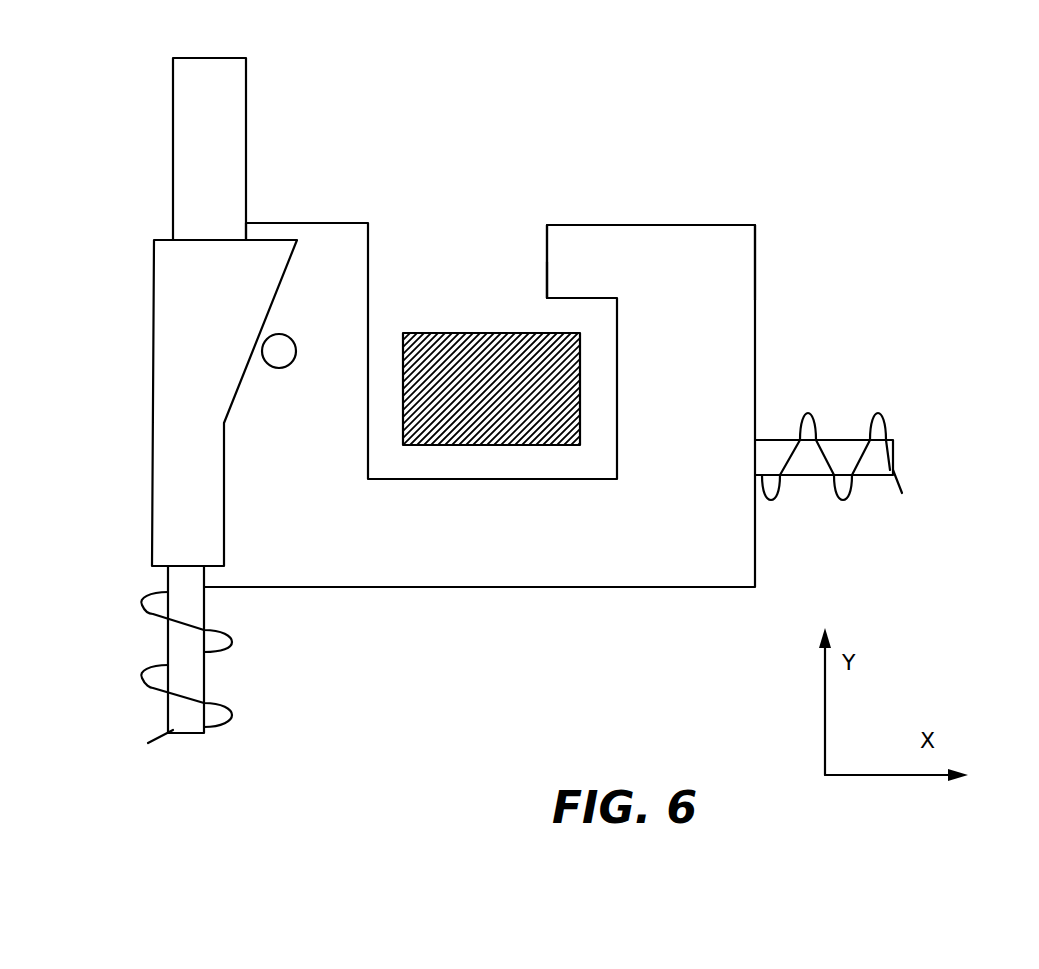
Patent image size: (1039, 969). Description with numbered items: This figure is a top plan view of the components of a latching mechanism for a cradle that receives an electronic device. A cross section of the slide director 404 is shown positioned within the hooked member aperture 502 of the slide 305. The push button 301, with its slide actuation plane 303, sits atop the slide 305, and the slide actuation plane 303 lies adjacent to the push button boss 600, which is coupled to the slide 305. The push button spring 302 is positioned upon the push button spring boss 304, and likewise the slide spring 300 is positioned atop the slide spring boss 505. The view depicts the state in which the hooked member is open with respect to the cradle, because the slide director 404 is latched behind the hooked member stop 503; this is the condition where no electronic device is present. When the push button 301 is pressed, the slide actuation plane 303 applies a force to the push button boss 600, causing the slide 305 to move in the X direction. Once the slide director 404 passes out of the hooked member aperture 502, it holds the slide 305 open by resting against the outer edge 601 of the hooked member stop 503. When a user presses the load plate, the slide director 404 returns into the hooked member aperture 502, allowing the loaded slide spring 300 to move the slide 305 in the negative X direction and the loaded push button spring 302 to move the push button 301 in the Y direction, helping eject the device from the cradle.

The push button 301 is at (212, 158).
The slide actuation plane 303 is at (262, 258).
The push button boss 600 is at (279, 352).
The push button spring 302 is at (143, 675).
The push button spring boss 304 is at (204, 668).
The hooked member aperture 502 is at (466, 462).
The hooked member stop 503 is at (590, 243).
The outer edge 601 is at (547, 263).
The slide director 404 is at (480, 352).
The slide spring 300 is at (842, 500).
The slide spring boss 505 is at (838, 440).
The slide 305 is at (614, 648).